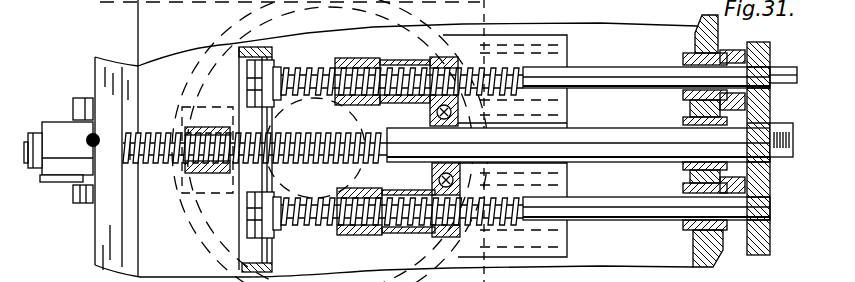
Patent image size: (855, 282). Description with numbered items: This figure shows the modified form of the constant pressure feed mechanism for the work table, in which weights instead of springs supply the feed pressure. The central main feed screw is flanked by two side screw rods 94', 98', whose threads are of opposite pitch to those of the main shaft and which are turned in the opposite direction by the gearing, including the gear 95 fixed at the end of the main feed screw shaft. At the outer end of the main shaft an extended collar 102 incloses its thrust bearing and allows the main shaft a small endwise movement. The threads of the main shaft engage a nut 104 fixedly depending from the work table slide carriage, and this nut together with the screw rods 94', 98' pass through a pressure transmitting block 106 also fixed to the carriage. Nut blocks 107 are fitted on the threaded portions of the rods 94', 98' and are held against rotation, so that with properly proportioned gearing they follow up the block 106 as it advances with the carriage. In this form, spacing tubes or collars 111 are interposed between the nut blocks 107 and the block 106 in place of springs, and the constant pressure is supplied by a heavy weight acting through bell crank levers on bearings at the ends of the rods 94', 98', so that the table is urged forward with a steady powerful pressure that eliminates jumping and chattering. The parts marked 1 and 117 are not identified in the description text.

The housing end wall 1 is at (694, 250).
The screw rod 94' is at (525, 226).
The gear 95 is at (766, 115).
The screw rod 98' is at (539, 92).
The extended collar 102 is at (62, 187).
The nut 104 is at (213, 173).
The pressure transmitting block 106 is at (464, 179).
The nut block 107 is at (378, 57).
The spacing tube 111 is at (431, 62).
The cover 117 is at (203, 150).